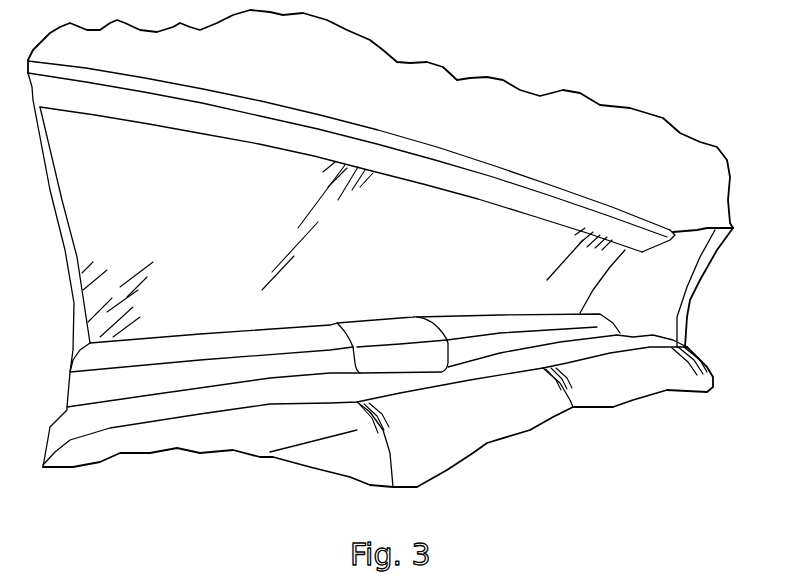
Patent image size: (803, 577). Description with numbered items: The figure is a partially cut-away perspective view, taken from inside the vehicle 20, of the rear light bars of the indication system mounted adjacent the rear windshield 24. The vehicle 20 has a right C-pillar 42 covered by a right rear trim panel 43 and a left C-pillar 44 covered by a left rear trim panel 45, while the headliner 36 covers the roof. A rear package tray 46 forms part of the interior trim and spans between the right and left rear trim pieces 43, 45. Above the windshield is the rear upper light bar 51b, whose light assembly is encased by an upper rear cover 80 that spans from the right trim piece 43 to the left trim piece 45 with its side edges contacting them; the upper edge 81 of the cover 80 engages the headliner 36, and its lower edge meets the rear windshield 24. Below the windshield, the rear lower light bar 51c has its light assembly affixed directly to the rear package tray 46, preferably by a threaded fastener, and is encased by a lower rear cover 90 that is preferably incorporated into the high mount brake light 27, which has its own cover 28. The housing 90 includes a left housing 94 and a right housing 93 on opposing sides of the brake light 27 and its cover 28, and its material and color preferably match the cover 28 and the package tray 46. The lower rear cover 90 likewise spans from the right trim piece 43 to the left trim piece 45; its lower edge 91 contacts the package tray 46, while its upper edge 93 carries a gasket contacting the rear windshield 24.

The vehicle 20 is at (378, 434).
The rear windshield 24 is at (227, 237).
The high mount brake light 27 is at (373, 312).
The cover 28 is at (402, 295).
The headliner 36 is at (565, 163).
The right C-pillar 42 is at (70, 270).
The right rear trim panel 43 is at (88, 239).
The left C-pillar 44 is at (720, 287).
The left rear trim panel 45 is at (691, 288).
The rear package tray 46 is at (713, 362).
The rear upper light bar 51b is at (380, 121).
The rear lower light bar 51c is at (365, 434).
The upper rear cover 80 is at (341, 179).
The upper edge 81 is at (644, 196).
The lower rear cover 90 is at (433, 278).
The lower edge 91 is at (421, 427).
The right housing 93 is at (211, 326).
The left housing 94 is at (552, 310).